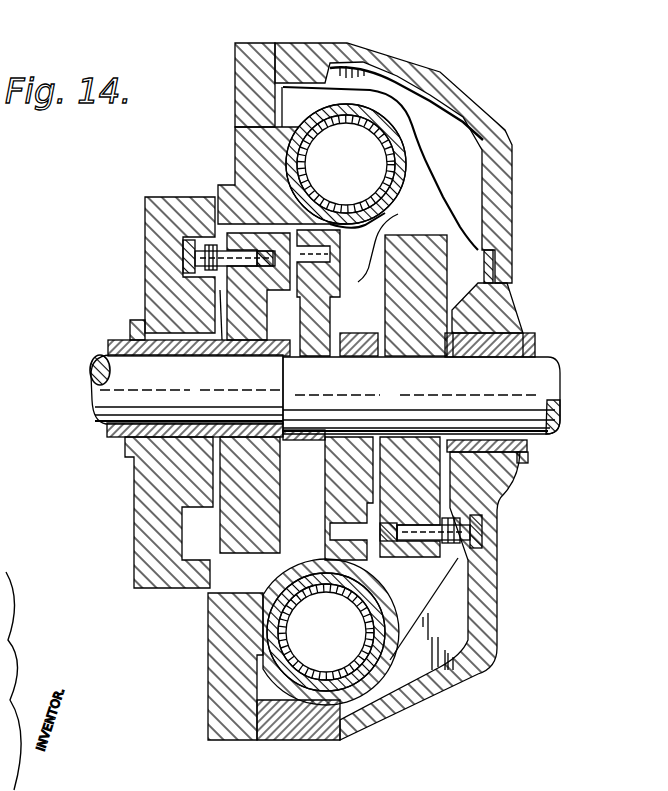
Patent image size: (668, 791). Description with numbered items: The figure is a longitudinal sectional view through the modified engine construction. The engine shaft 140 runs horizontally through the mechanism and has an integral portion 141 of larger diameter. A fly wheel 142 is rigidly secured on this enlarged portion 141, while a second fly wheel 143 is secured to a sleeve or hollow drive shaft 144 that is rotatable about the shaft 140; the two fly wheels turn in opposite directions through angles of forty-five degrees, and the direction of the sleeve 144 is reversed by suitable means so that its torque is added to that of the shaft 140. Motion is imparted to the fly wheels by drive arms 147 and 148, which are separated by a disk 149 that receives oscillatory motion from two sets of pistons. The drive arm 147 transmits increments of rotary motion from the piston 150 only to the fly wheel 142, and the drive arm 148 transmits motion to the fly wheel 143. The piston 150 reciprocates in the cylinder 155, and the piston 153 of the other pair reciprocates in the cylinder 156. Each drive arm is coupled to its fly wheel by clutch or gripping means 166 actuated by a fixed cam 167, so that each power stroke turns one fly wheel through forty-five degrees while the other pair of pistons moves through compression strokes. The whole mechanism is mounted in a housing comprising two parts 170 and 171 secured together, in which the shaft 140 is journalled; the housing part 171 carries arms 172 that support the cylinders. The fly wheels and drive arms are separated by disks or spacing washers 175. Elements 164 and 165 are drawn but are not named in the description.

The engine shaft 140 is at (90, 363).
The integral portion of larger diameter 141 is at (560, 375).
The fly wheel 142 is at (447, 259).
The fly wheel 143 is at (233, 488).
The sleeve or hollow drive shaft 144 is at (107, 428).
The drive arm 147 is at (338, 485).
The drive arm 148 is at (320, 308).
The disk 149 is at (375, 242).
The piston 150 is at (350, 640).
The piston 153 is at (370, 135).
The cylinder 155 is at (298, 603).
The cylinder 156 is at (372, 150).
The bearing boss 164 is at (387, 210).
The spacer plate 165 is at (360, 345).
The clutch or gripping means 166 is at (253, 234).
The fixed cam 167 is at (183, 252).
The housing part 170 is at (503, 167).
The housing part 171 is at (222, 705).
The arms 172 is at (245, 150).
The disks or spacing washers 175 is at (288, 356).